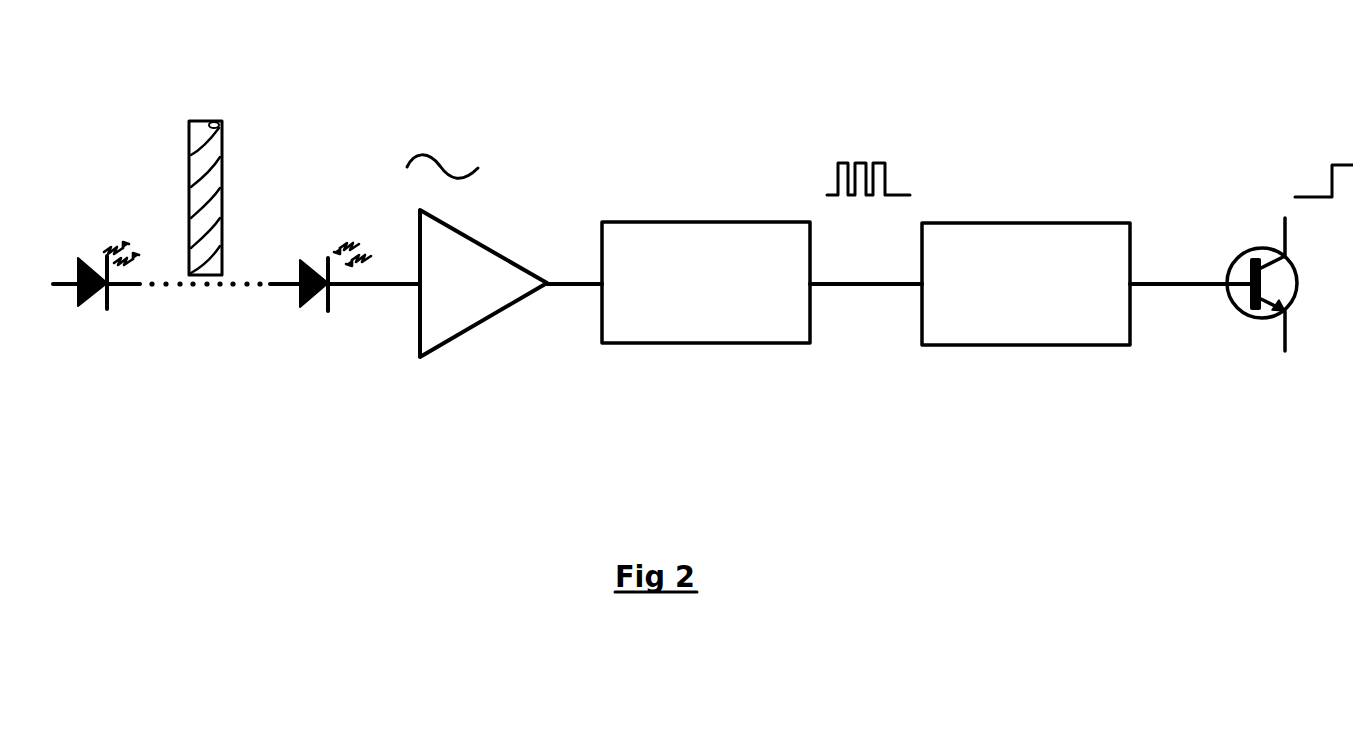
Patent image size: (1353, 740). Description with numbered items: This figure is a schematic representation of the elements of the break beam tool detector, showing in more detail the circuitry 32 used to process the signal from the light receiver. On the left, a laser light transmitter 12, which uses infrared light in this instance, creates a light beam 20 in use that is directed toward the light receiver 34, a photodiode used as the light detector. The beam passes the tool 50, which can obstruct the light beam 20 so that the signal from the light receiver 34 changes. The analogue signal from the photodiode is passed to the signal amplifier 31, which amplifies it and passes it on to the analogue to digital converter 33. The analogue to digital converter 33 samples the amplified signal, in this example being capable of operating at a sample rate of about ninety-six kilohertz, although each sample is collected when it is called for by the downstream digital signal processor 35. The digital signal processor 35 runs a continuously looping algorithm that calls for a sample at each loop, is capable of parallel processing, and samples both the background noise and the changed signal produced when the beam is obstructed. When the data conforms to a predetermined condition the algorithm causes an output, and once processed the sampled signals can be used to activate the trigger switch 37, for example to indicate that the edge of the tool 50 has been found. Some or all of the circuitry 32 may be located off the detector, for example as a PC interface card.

The laser light transmitter 12 is at (90, 305).
The light beam 20 is at (208, 285).
The tool 50 is at (222, 198).
The light receiver 34 is at (308, 306).
The amplifier 31 is at (470, 325).
The analogue to digital converter 33 is at (688, 344).
The digital signal processor 35 is at (1020, 346).
The trigger switch 37 is at (1245, 316).
The circuitry 32 is at (745, 118).